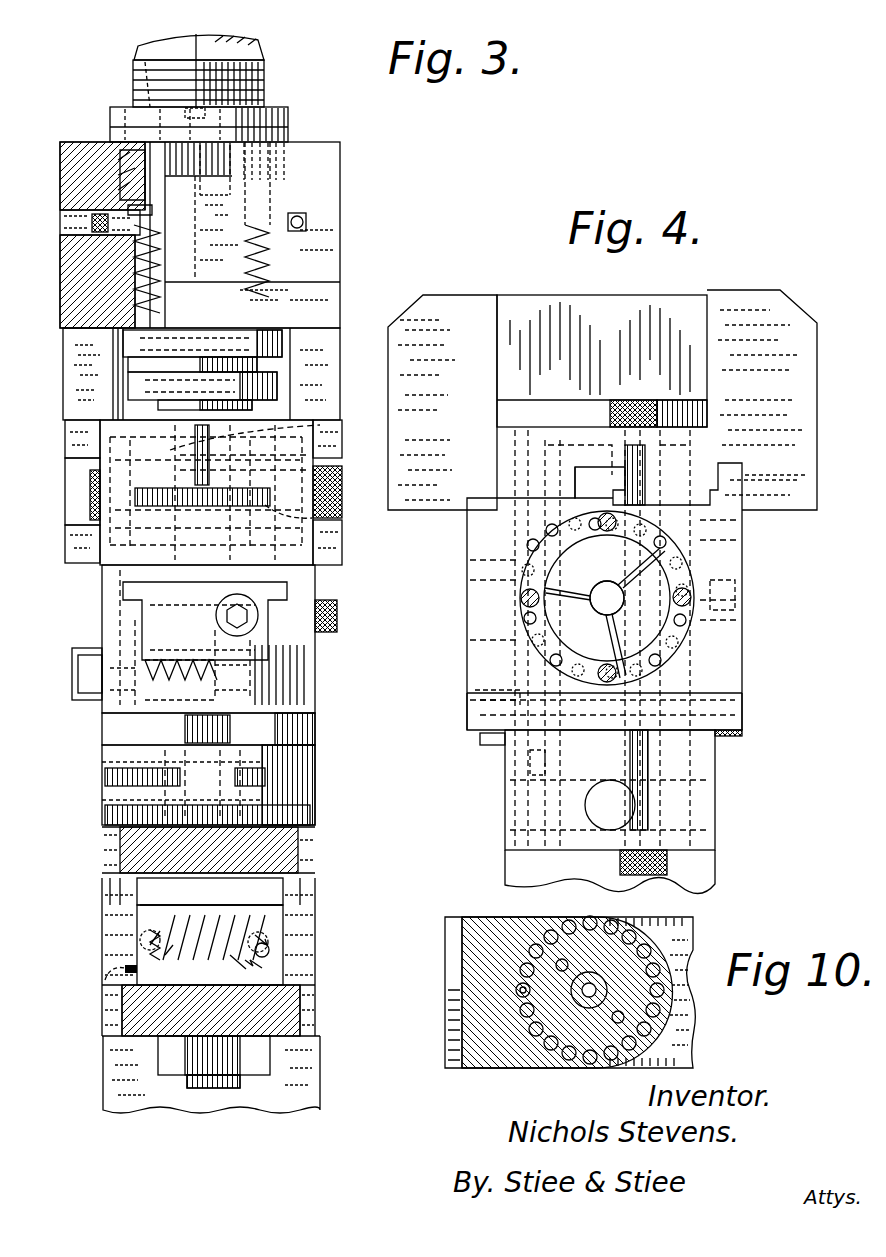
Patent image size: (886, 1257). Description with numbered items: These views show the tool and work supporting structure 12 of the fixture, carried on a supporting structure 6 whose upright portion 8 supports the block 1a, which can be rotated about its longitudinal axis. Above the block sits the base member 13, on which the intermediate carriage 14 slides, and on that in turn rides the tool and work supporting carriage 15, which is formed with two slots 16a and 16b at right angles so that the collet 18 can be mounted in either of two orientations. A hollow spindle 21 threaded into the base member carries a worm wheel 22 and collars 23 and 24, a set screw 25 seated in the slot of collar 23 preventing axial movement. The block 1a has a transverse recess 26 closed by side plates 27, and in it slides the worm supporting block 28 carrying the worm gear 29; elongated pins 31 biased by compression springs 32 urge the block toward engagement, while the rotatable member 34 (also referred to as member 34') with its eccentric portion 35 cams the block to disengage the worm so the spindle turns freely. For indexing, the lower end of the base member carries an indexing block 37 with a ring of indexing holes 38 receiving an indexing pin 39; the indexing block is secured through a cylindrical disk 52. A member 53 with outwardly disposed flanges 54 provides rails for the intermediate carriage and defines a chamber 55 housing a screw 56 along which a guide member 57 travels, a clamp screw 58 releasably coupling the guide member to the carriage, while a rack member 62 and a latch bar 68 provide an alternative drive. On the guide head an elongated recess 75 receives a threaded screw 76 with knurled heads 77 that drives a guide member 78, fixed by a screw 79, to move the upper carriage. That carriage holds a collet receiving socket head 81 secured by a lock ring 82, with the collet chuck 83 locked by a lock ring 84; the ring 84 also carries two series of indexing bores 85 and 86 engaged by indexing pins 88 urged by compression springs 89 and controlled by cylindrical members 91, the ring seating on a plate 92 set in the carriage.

In FIG. 3, the block 1a is at (93, 893).
In FIG. 4, the block 1a is at (716, 868).
In FIG. 10, the block 1a is at (680, 1032).
In FIG. 4, the supporting structure 6 is at (754, 286).
In FIG. 3, the upright portion 8 is at (312, 1072).
In FIG. 4, the upright portion 8 is at (522, 300).
In FIG. 3, the tool and work supporting structure 12 is at (350, 263).
In FIG. 4, the tool and work supporting structure 12 is at (448, 596).
In FIG. 3, the base member 13 is at (328, 679).
In FIG. 4, the base member 13 is at (732, 762).
In FIG. 3, the intermediate carriage 14 is at (326, 583).
In FIG. 4, the intermediate carriage 14 is at (757, 667).
In FIG. 3, the tool and work supporting carriage 15 is at (333, 185).
In FIG. 4, the tool and work supporting carriage 15 is at (505, 476).
In FIG. 3, the slot 16a is at (88, 490).
In FIG. 4, the slot 16a is at (478, 690).
In FIG. 4, the slot 16b is at (620, 490).
In FIG. 3, the collet 18 is at (122, 43).
In FIG. 4, the collet 18 is at (522, 612).
In FIG. 3, the hollow spindle 21 is at (208, 1088).
In FIG. 3, the worm wheel 22 is at (318, 962).
In FIG. 3, the collar 23 is at (300, 882).
In FIG. 3, the collar 24 is at (168, 1068).
In FIG. 3, the set screw 25 is at (310, 845).
In FIG. 3, the recess 26 is at (300, 1000).
In FIG. 3, the side plates 27 is at (115, 1022).
In FIG. 3, the worm supporting block 28 is at (300, 908).
In FIG. 3, the worm gear 29 is at (118, 944).
In FIG. 3, the elongated pins 31 is at (300, 930).
In FIG. 3, the compression springs 32 is at (125, 925).
In FIG. 3, the rotatable member 34 is at (85, 998).
In FIG. 3, the rotatable member 34' is at (312, 978).
In FIG. 3, the eccentric portion 35 is at (140, 975).
In FIG. 3, the indexing block 37 is at (318, 758).
In FIG. 10, the indexing block 37 is at (492, 920).
In FIG. 3, the indexing holes 38 is at (318, 810).
In FIG. 10, the indexing holes 38 is at (574, 916).
In FIG. 10, the indexing pin 39 is at (522, 998).
In FIG. 3, the cylindrical disk 52 is at (314, 728).
In FIG. 3, the member 53 is at (108, 610).
In FIG. 3, the flanges 54 is at (124, 590).
In FIG. 3, the chamber 55 is at (150, 622).
In FIG. 4, the screw 56 is at (645, 462).
In FIG. 4, the guide member 57 is at (690, 536).
In FIG. 3, the clamp screw 58 is at (340, 616).
In FIG. 4, the clamp screw 58 is at (740, 598).
In FIG. 4, the rack member 62 is at (522, 770).
In FIG. 4, the latch bar 68 is at (480, 742).
In FIG. 3, the elongated recess 75 is at (306, 462).
In FIG. 3, the threaded screw 76 is at (302, 512).
In FIG. 3, the knurled heads 77 is at (340, 482).
In FIG. 4, the knurled heads 77 is at (732, 736).
In FIG. 3, the guide member 78 is at (270, 455).
In FIG. 3, the screw 79 is at (272, 365).
In FIG. 3, the collet receiving socket head 81 is at (288, 112).
In FIG. 3, the lock ring 82 is at (295, 345).
In FIG. 3, the collet chuck 83 is at (250, 40).
In FIG. 3, the lock ring 84 is at (288, 136).
In FIG. 4, the indexing bores 85 is at (692, 556).
In FIG. 4, the indexing bores 86 is at (680, 625).
In FIG. 3, the indexing pin 88 is at (130, 195).
In FIG. 3, the compression springs 89 is at (132, 278).
In FIG. 3, the cylindrical member 91 is at (66, 235).
In FIG. 3, the plate 92 is at (132, 200).